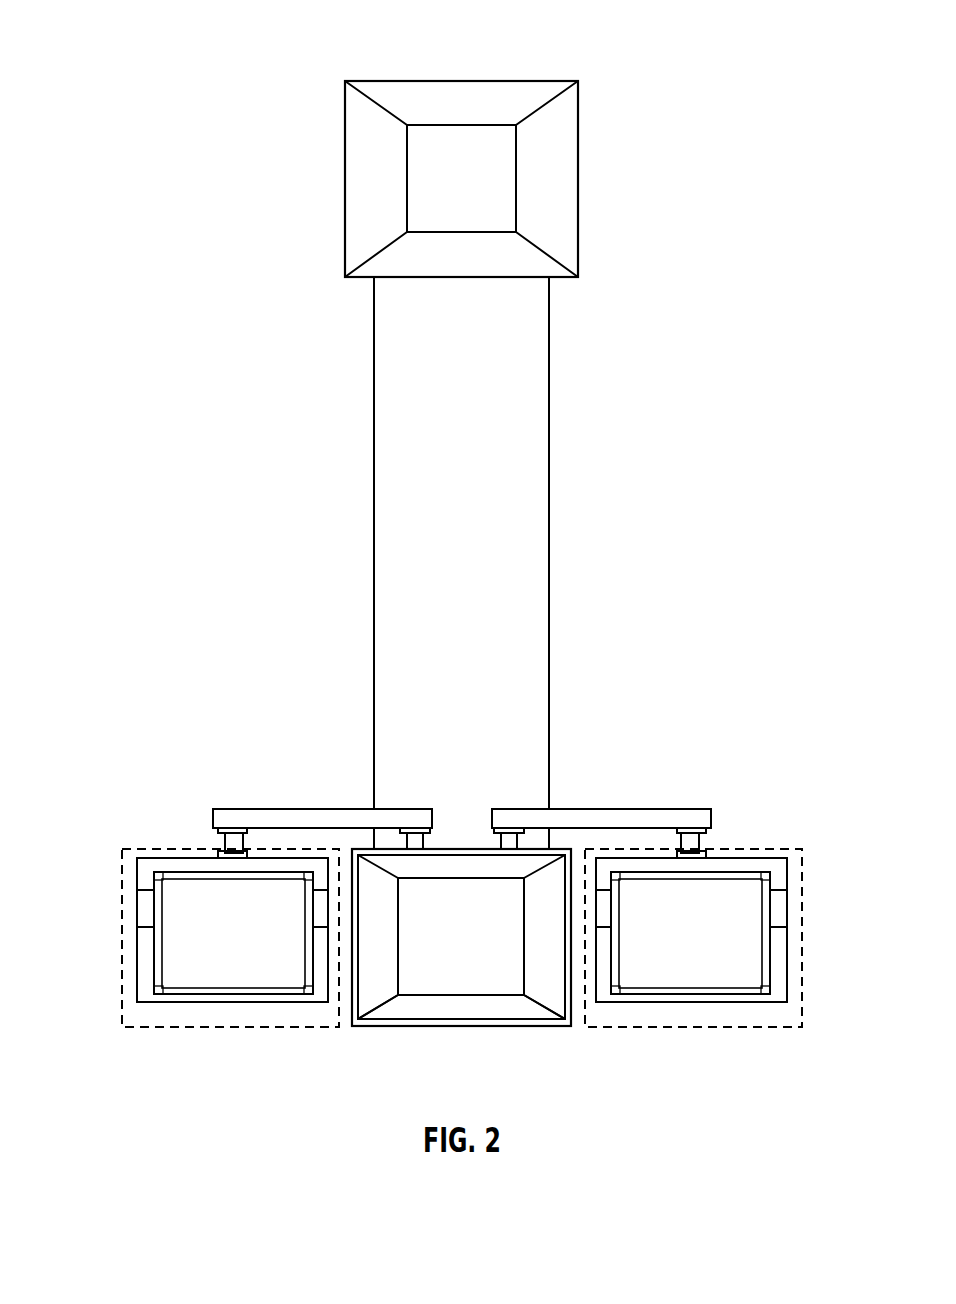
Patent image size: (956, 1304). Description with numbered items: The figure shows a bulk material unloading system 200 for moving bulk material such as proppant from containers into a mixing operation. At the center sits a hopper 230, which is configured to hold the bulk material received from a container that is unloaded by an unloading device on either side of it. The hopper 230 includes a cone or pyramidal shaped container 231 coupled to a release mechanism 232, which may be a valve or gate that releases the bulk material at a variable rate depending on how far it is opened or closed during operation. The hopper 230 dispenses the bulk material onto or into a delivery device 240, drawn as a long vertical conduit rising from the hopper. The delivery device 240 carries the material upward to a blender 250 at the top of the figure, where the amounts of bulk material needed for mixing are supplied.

The bulk material unloading system 200 is at (322, 30).
The blender 250 is at (345, 168).
The delivery device 240 is at (374, 428).
The hopper 230 is at (432, 1027).
The cone or pyramidal shaped container 231 is at (375, 965).
The release mechanism 232 is at (513, 961).